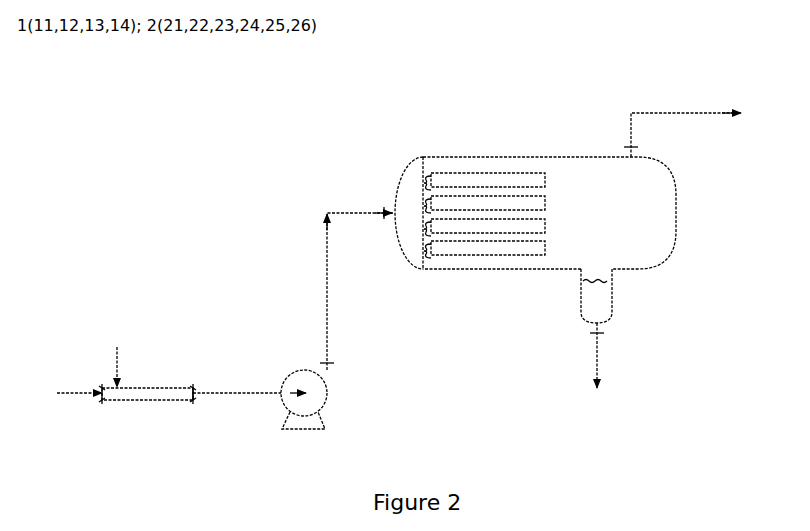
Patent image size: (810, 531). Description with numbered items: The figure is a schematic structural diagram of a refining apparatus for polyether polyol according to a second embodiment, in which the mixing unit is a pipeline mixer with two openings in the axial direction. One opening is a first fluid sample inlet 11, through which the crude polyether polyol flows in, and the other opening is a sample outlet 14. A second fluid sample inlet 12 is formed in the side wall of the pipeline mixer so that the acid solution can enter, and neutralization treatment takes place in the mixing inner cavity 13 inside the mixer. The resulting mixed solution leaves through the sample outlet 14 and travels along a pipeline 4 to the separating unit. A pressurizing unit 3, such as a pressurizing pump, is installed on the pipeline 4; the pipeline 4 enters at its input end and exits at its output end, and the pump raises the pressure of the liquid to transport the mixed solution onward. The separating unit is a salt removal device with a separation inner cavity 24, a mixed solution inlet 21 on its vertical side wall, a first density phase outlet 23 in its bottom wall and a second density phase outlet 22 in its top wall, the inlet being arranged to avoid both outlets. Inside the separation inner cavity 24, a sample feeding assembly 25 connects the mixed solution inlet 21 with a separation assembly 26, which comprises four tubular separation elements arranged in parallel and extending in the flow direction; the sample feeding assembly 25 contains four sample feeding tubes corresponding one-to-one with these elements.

The first fluid sample inlet 11 is at (63, 389).
The second fluid sample inlet 12 is at (115, 356).
The mixing inner cavity 13 is at (147, 395).
The sample outlet 14 is at (194, 387).
The pressurizing unit 3 is at (317, 397).
The pipeline 4 is at (330, 320).
The mixed solution inlet 21 is at (390, 207).
The second density phase outlet 22 is at (665, 113).
The first density phase outlet 23 is at (605, 302).
The separation inner cavity 24 is at (638, 237).
The sample feeding assembly 25 is at (420, 258).
The separation assembly 26 is at (485, 257).